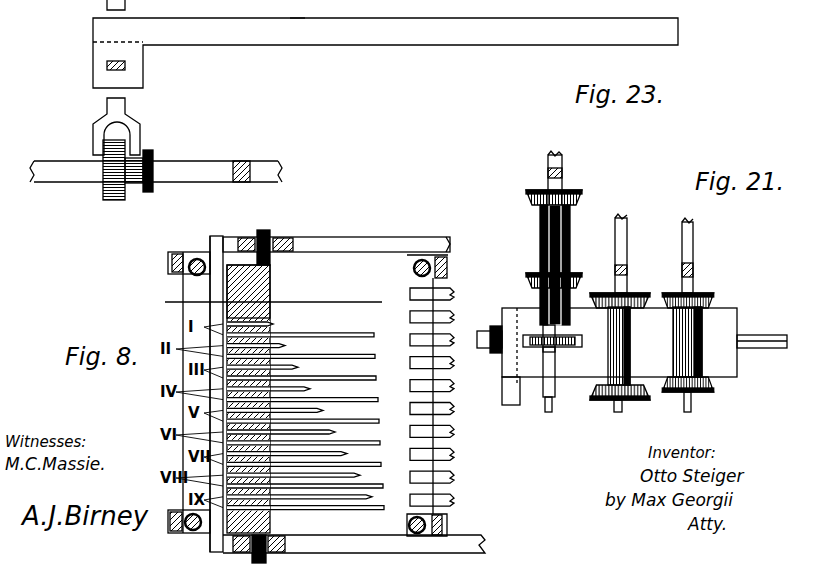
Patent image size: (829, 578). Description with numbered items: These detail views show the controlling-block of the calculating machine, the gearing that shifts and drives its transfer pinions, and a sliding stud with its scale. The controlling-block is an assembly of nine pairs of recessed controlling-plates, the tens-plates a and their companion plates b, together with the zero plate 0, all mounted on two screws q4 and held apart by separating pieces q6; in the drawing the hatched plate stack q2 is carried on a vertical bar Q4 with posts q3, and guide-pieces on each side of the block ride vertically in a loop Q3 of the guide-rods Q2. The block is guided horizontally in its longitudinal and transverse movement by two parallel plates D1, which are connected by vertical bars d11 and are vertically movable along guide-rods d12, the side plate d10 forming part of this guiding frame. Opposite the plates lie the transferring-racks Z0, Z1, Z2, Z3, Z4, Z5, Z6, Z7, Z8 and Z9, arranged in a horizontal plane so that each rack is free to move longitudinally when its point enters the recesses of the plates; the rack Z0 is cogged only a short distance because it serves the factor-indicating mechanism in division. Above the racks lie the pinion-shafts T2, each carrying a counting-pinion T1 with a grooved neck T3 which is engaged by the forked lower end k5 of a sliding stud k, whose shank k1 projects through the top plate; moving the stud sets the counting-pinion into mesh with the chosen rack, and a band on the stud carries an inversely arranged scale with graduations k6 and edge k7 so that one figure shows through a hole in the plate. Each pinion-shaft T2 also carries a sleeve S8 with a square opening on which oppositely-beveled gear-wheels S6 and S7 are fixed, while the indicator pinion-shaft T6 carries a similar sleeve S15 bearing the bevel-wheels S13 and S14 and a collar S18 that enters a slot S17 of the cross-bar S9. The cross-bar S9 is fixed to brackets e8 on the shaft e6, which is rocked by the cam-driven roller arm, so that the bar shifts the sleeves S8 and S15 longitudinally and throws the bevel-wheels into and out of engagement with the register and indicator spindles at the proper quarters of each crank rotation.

In FIG. 23, the sliding stud k is at (354, 44).
In FIG. 23, the shank of sliding stud k1 is at (107, 66).
In FIG. 23, the forked lower end of stud k5 is at (133, 133).
In FIG. 23, the scale graduations k6 is at (405, 27).
In FIG. 23, the scale bar edge k7 is at (297, 24).
In FIG. 23, the counting-pinion T1 is at (105, 196).
In FIG. 23, the pinion-shaft T2 is at (183, 170).
In FIG. 21, the pinion-shaft T2 is at (692, 240).
In FIG. 23, the grooved neck of counting-pinion T3 is at (135, 192).
In FIG. 8, the side plate d10 is at (183, 535).
In FIG. 8, the vertical bar d11 is at (445, 527).
In FIG. 8, the guide-rod d12 is at (415, 533).
In FIG. 8, the guide-rod Q2 is at (480, 548).
In FIG. 8, the loop of guide-rod Q3 is at (290, 240).
In FIG. 8, the vertical bar Q4 is at (222, 240).
In FIG. 8, the slotted block q2 is at (270, 522).
In FIG. 8, the post q3 is at (262, 537).
In FIG. 8, the screw q4 is at (266, 276).
In FIG. 8, the separating piece q6 is at (275, 356).
In FIG. 8, the parallel plate D1 is at (357, 282).
In FIG. 8, the tens-plate a is at (308, 410).
In FIG. 8, the units-plate b is at (313, 416).
In FIG. 8, the zero graduation 0 is at (268, 301).
In FIG. 8, the transferring-rack Z0 is at (456, 295).
In FIG. 8, the transferring-rack Z1 is at (456, 318).
In FIG. 8, the transferring-rack Z2 is at (456, 341).
In FIG. 8, the transferring-rack Z3 is at (456, 364).
In FIG. 8, the transferring-rack Z4 is at (456, 387).
In FIG. 8, the transferring-rack Z5 is at (456, 410).
In FIG. 8, the transferring-rack Z6 is at (456, 432).
In FIG. 8, the transferring-rack Z7 is at (456, 455).
In FIG. 8, the transferring-rack Z8 is at (456, 478).
In FIG. 8, the transferring-rack Z9 is at (456, 501).
In FIG. 21, the beveled gear-wheel S6 is at (705, 296).
In FIG. 21, the beveled gear-wheel S7 is at (705, 394).
In FIG. 21, the sleeve S8 is at (703, 355).
In FIG. 21, the cross-bar S9 is at (722, 318).
In FIG. 21, the bevel-wheel S13 is at (535, 198).
In FIG. 21, the bevel-wheel S14 is at (535, 278).
In FIG. 21, the indicator sleeve S15 is at (540, 300).
In FIG. 21, the slot of cross-bar S17 is at (572, 340).
In FIG. 21, the collar S18 is at (560, 349).
In FIG. 21, the indicator pinion-shaft T6 is at (550, 370).
In FIG. 21, the shaft e6 is at (765, 340).
In FIG. 21, the bracket e8 is at (510, 398).